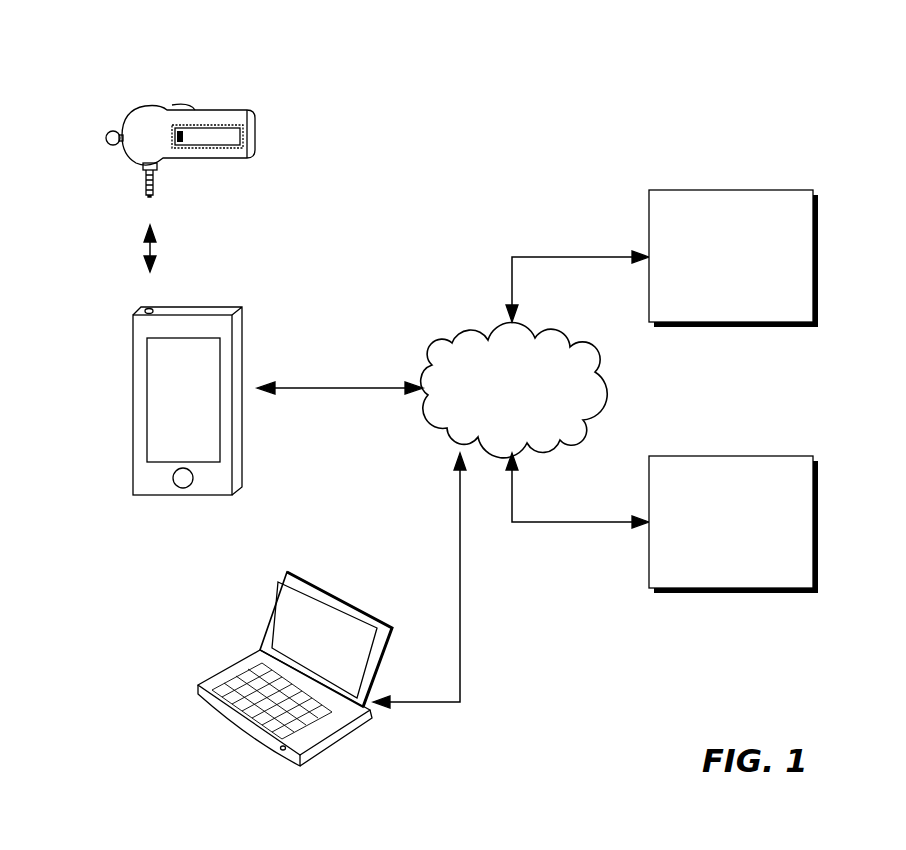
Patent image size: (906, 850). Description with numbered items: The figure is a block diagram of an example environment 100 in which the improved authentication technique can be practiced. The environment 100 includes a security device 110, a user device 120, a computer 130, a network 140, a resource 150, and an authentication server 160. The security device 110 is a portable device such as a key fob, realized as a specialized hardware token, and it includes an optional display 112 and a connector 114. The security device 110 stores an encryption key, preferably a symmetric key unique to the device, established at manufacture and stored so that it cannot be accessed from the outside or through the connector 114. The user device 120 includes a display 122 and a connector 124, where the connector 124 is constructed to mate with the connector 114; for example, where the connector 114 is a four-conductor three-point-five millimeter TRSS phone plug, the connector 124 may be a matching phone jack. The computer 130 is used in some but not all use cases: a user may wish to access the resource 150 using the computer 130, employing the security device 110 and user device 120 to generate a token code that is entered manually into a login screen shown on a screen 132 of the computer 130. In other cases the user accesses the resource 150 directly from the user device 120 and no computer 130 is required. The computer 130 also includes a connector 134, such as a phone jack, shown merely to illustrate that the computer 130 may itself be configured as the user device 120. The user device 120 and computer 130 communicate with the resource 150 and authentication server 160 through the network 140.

The example environment 100 is at (716, 69).
The security device 110 is at (118, 95).
The display 112 is at (212, 130).
The connector 114 is at (157, 178).
The user device 120 is at (108, 300).
The display 122 is at (152, 397).
The connector 124 is at (150, 308).
The computer 130 is at (236, 617).
The screen 132 is at (318, 607).
The connector 134 is at (282, 750).
The network 140 is at (514, 389).
The resource 150 is at (733, 258).
The authentication server 160 is at (733, 524).